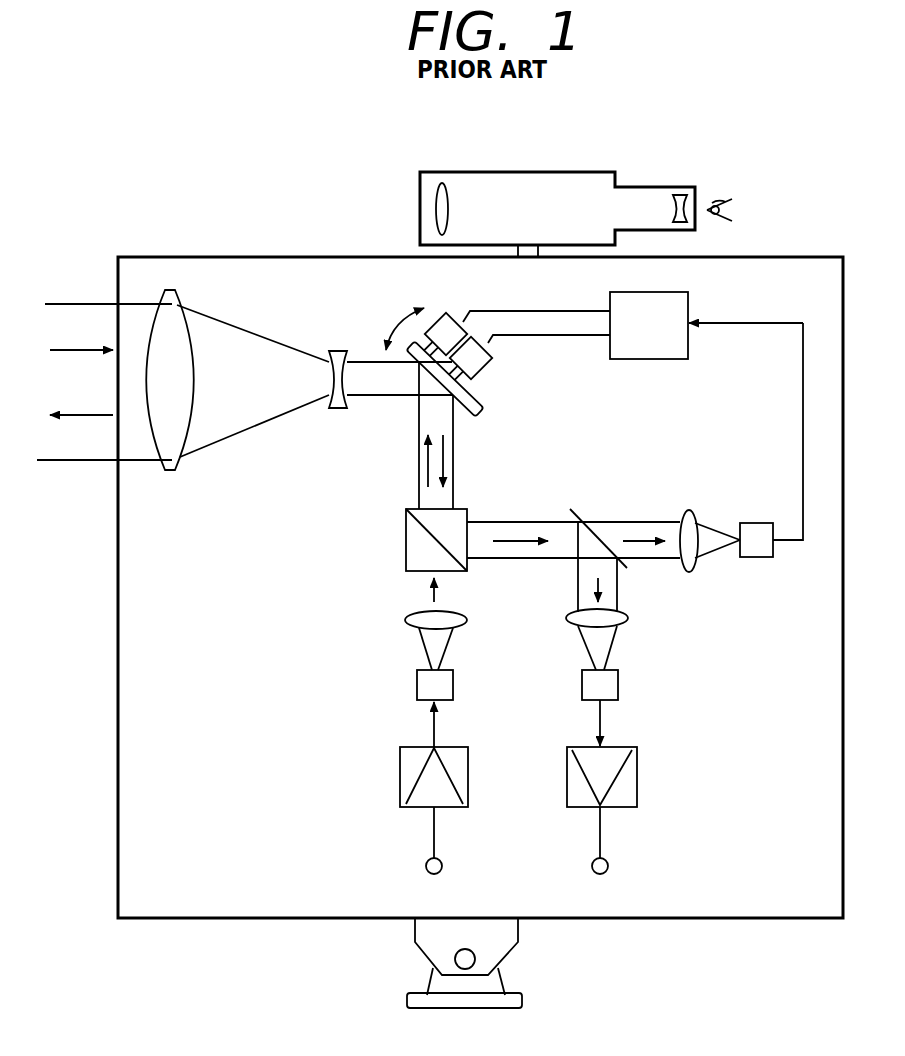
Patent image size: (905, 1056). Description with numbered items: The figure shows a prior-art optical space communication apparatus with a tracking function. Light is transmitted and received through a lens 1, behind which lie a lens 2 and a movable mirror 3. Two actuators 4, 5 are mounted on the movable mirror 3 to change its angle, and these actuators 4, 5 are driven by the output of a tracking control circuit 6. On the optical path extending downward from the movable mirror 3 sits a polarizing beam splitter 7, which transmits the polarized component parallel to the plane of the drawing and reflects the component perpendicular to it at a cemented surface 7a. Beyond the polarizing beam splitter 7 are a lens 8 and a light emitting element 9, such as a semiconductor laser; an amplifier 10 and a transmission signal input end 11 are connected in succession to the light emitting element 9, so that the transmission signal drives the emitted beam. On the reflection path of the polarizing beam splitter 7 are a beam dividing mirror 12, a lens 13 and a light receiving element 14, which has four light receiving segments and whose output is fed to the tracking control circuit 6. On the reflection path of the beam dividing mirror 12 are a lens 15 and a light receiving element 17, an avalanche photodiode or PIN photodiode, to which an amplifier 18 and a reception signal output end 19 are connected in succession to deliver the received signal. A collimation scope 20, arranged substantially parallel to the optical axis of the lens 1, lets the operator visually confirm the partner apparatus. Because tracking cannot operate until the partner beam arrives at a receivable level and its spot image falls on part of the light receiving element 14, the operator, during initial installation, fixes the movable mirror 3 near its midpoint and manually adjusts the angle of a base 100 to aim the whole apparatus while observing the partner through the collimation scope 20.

The lens for transmission/reception 1 is at (190, 342).
The lens 2 is at (333, 350).
The movable mirror 3 is at (470, 405).
The actuator 4 is at (450, 315).
The actuator 5 is at (488, 363).
The tracking control circuit 6 is at (690, 300).
The polarizing beam splitter 7 is at (406, 545).
The cemented surface 7a is at (406, 512).
The lens 8 is at (405, 620).
The light emitting element 9 is at (417, 688).
The amplifier 10 is at (408, 757).
The transmission signal input end 11 is at (425, 862).
The beam dividing mirror 12 is at (577, 507).
The lens 13 is at (690, 512).
The light receiving element 14 is at (760, 560).
The lens 15 is at (628, 618).
The light receiving element 17 is at (618, 688).
The amplifier 18 is at (627, 787).
The reception signal output end 19 is at (608, 860).
The collimation scope 20 is at (540, 172).
The base 100 is at (503, 985).